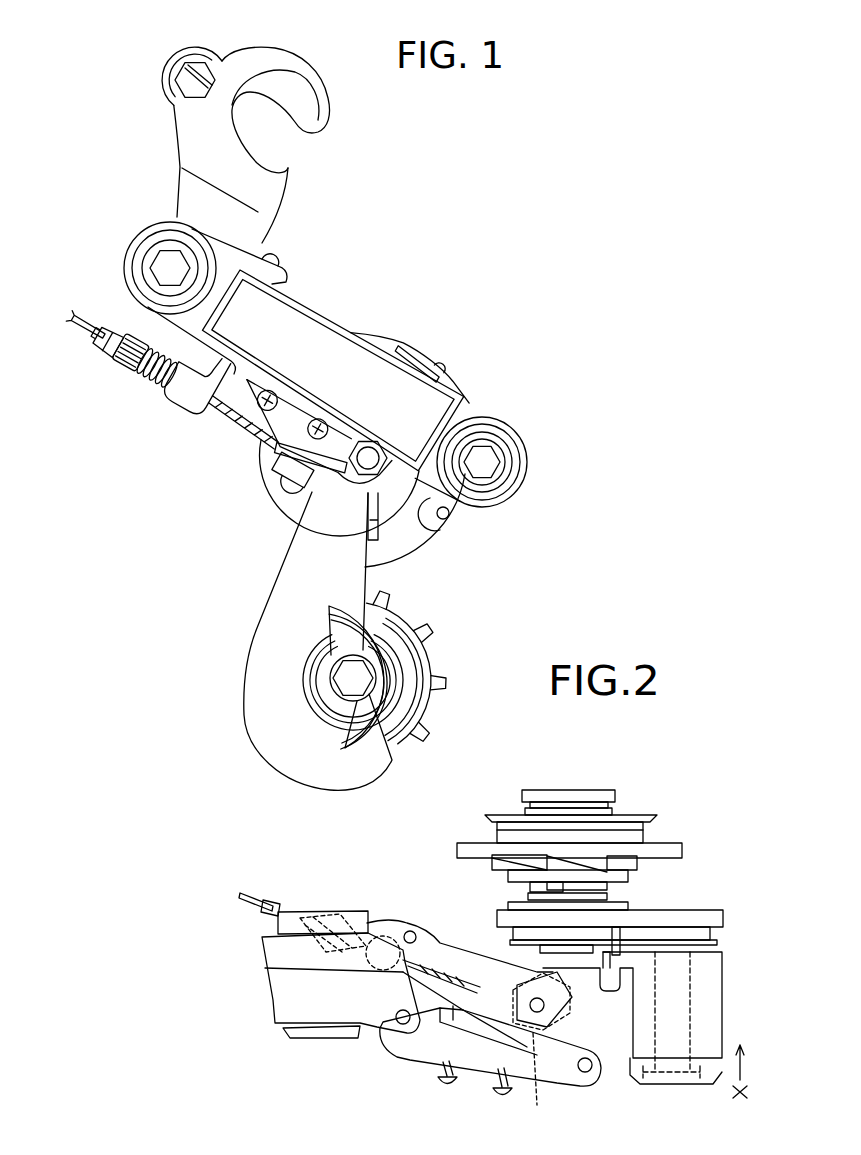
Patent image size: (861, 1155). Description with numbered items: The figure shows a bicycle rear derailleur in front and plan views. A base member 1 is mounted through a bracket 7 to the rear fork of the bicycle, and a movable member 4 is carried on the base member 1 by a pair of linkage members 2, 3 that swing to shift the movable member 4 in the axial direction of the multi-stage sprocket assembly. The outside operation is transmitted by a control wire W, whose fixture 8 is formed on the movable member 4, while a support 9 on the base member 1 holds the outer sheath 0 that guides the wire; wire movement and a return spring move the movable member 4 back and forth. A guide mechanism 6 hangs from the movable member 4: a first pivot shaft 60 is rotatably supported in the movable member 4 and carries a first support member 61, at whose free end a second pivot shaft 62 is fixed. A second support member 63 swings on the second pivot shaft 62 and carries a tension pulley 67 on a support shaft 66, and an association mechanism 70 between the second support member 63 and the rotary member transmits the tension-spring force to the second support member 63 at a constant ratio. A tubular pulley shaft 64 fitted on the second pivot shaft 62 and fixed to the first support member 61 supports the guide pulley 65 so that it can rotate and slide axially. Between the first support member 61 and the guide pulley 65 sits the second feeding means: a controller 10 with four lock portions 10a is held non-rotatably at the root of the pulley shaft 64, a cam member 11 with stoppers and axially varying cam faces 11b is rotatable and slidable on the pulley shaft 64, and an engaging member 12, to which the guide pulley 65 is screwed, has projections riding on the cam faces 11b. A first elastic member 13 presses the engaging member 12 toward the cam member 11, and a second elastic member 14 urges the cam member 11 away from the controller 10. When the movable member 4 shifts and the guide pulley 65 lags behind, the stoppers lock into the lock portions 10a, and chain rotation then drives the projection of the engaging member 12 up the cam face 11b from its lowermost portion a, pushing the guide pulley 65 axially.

In FIG. 1, the base member 1 is at (127, 250).
In FIG. 2, the base member 1 is at (272, 995).
In FIG. 1, the linkage member 2 is at (335, 335).
In FIG. 2, the linkage member 2 is at (418, 1053).
In FIG. 2, the linkage member 3 is at (450, 943).
In FIG. 1, the movable member 4 is at (480, 410).
In FIG. 2, the movable member 4 is at (720, 1013).
In FIG. 1, the guide mechanism 6 is at (345, 641).
In FIG. 2, the guide mechanism 6 is at (680, 913).
In FIG. 1, the bracket 7 is at (187, 137).
In FIG. 2, the bracket 7 is at (347, 911).
In FIG. 1, the fixture 8 is at (280, 477).
In FIG. 2, the fixture 8 is at (542, 1049).
In FIG. 1, the support 9 is at (123, 367).
In FIG. 1, the outer sheath 0 is at (107, 350).
In FIG. 2, the outer sheath 0 is at (287, 899).
In FIG. 1, the control wire W is at (77, 320).
In FIG. 2, the control wire W is at (250, 893).
In FIG. 2, the controller 10 is at (631, 909).
In FIG. 2, the lock portions 10a is at (520, 903).
In FIG. 2, the cam member 11 is at (630, 877).
In FIG. 2, the cam faces 11b is at (510, 855).
In FIG. 1, the engaging member 12 is at (448, 532).
In FIG. 2, the engaging member 12 is at (610, 850).
In FIG. 2, the first elastic member 13 is at (558, 810).
In FIG. 2, the second elastic member 14 is at (533, 880).
In FIG. 1, the first pivot shaft 60 is at (490, 461).
In FIG. 2, the first pivot shaft 60 is at (693, 985).
In FIG. 2, the first support member 61 is at (720, 913).
In FIG. 1, the second pivot shaft 62 is at (377, 477).
In FIG. 1, the second support member 63 is at (270, 587).
In FIG. 2, the second support member 63 is at (507, 927).
In FIG. 2, the pulley shaft 64 is at (590, 793).
In FIG. 2, the guide pulley 65 is at (627, 817).
In FIG. 1, the support shaft 66 is at (337, 678).
In FIG. 1, the tension pulley 67 is at (447, 690).
In FIG. 2, the association mechanism 70 is at (720, 942).
In FIG. 2, the lowermost portion a is at (633, 867).